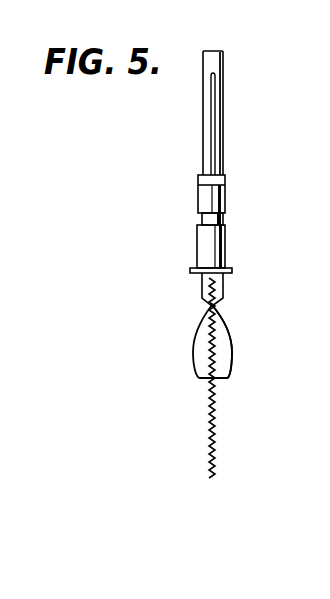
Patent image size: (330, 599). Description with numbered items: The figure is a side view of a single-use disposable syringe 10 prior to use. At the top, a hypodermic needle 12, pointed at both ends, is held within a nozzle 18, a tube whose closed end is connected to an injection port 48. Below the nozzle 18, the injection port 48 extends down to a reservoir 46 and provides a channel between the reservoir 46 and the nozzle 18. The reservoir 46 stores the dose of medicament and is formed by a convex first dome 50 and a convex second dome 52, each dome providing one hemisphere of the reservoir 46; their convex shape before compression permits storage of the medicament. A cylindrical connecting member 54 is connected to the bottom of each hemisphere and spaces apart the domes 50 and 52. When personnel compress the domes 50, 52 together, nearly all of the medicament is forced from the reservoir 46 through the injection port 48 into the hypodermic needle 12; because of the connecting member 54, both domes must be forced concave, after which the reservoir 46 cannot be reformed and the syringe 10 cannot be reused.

The syringe 10 is at (140, 141).
The hypodermic needle 12 is at (213, 118).
The nozzle 18 is at (197, 242).
The reservoir 46 is at (202, 338).
The injection port 48 is at (224, 309).
The convex first dome 50 is at (193, 362).
The convex second dome 52 is at (234, 355).
The connecting member 54 is at (220, 381).